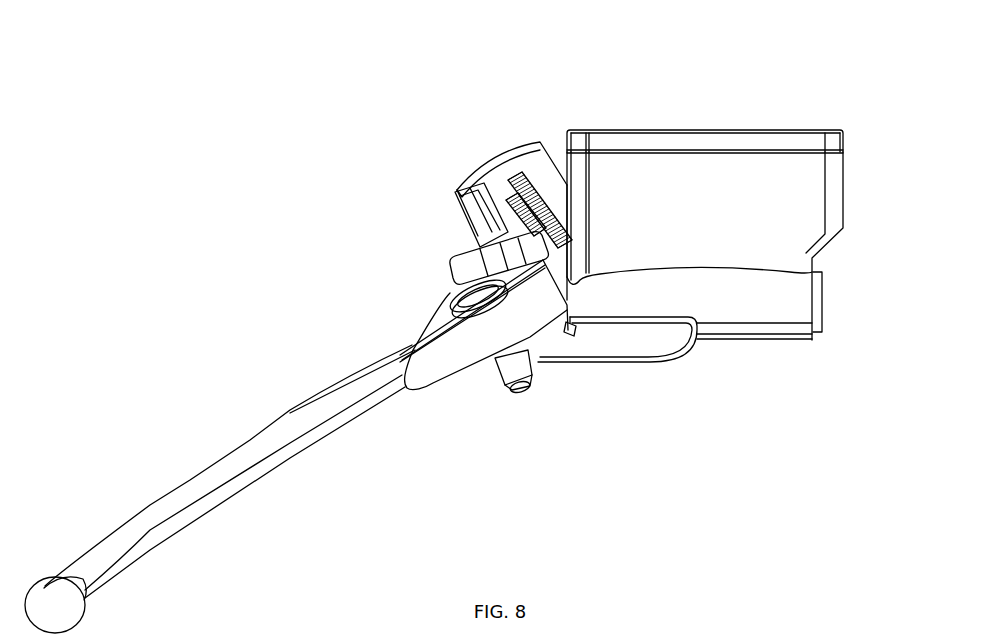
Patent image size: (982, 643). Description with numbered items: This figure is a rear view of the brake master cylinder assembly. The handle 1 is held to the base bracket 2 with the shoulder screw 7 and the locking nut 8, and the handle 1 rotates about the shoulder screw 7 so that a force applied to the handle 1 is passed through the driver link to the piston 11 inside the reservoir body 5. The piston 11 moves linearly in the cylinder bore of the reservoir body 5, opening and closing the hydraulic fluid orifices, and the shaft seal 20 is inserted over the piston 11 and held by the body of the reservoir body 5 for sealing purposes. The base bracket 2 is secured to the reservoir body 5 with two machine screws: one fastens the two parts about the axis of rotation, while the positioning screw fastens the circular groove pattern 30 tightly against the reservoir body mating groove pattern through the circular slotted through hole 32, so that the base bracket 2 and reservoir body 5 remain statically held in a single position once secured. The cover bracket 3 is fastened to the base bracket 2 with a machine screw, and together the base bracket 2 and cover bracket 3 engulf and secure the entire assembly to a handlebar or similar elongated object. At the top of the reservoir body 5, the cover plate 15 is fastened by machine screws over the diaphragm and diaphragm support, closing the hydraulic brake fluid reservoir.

The handle 1 is at (432, 372).
The base bracket 2 is at (455, 256).
The cover bracket 3 is at (548, 183).
The reservoir body 5 is at (787, 208).
The shoulder screw 7 is at (452, 289).
The locking nut 8 is at (516, 376).
The piston 11 is at (572, 332).
The cover plate 15 is at (772, 128).
The shaft seal 20 is at (574, 331).
The circular groove pattern 30 is at (505, 176).
The circular slotted through hole 32 is at (520, 180).